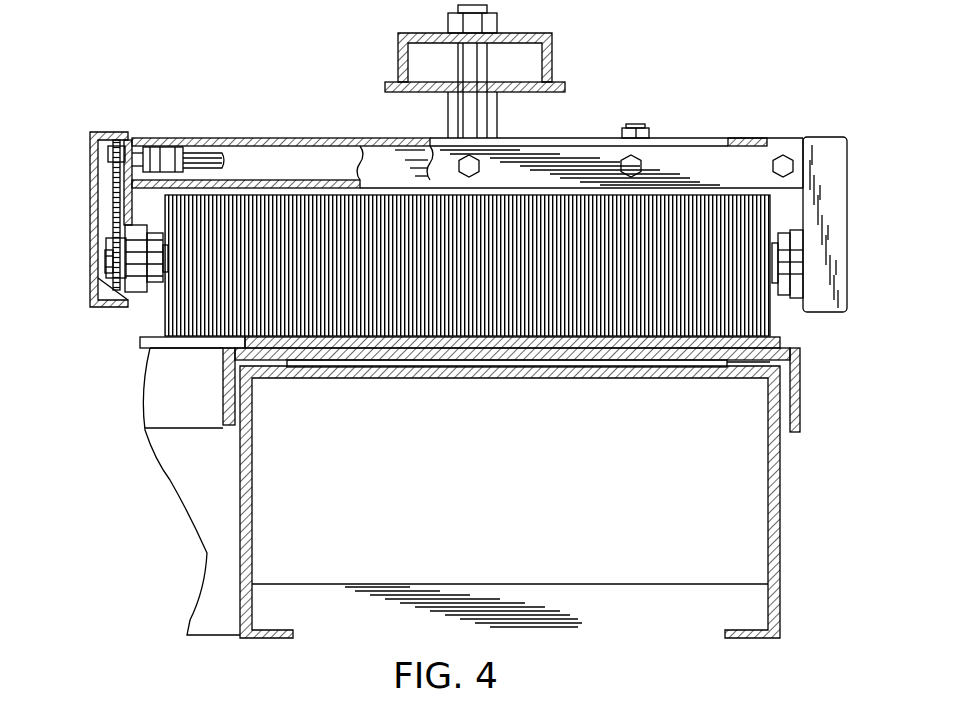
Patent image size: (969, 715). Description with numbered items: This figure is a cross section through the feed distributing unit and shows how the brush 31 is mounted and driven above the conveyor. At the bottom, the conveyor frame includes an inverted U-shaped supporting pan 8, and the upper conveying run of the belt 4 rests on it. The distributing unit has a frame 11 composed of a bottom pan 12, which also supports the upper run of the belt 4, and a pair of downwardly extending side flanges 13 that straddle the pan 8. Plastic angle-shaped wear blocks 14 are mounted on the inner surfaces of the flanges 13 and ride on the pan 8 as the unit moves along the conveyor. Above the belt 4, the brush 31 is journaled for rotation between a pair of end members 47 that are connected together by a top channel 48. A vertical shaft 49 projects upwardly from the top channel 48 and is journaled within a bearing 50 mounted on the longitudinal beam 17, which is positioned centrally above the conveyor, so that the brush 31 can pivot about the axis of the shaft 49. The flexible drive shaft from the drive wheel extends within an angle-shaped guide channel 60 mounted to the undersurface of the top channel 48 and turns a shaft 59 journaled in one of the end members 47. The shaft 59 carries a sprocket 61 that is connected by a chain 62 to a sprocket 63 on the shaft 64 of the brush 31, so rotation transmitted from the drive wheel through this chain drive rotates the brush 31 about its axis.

The belt 4 is at (781, 342).
The supporting pan 8 is at (781, 516).
The frame 11 is at (145, 380).
The bottom pan 12 is at (688, 354).
The side flanges 13 is at (223, 395).
The wear blocks 14 is at (287, 362).
The longitudinal beam 17 is at (552, 45).
The brush 31 is at (156, 311).
The end members 47 is at (90, 228).
The top channel 48 is at (783, 150).
The vertical shaft 49 is at (468, 62).
The bearing 50 is at (488, 22).
The shaft 59 is at (212, 157).
The guide channel 60 is at (316, 180).
The sprocket 61 is at (118, 138).
The chain 62 is at (118, 186).
The sprocket 63 is at (113, 277).
The shaft 64 is at (106, 260).